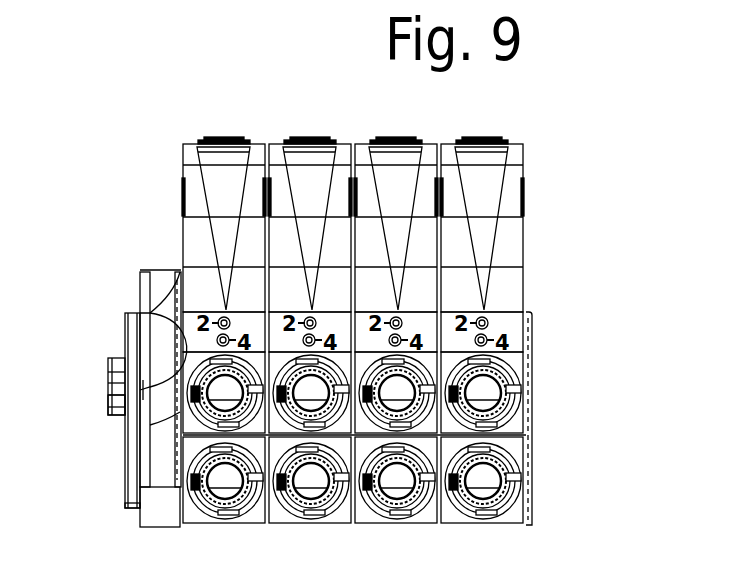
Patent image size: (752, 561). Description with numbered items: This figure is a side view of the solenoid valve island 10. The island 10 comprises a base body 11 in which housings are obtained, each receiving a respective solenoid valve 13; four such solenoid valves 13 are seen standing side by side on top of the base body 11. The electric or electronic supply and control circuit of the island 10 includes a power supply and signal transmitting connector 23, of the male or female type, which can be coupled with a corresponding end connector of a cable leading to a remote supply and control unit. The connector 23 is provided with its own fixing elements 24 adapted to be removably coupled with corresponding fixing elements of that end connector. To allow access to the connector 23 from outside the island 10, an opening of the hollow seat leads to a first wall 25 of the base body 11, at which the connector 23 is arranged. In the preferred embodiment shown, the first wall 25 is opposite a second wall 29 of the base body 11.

The solenoid valve island 10 is at (583, 108).
The base body 11 is at (540, 326).
The solenoid valve 13 is at (292, 132).
The power supply and signal transmitting connector 23 is at (100, 350).
The fixing elements 24 is at (100, 420).
The first wall 25 is at (140, 284).
The second wall 29 is at (532, 446).